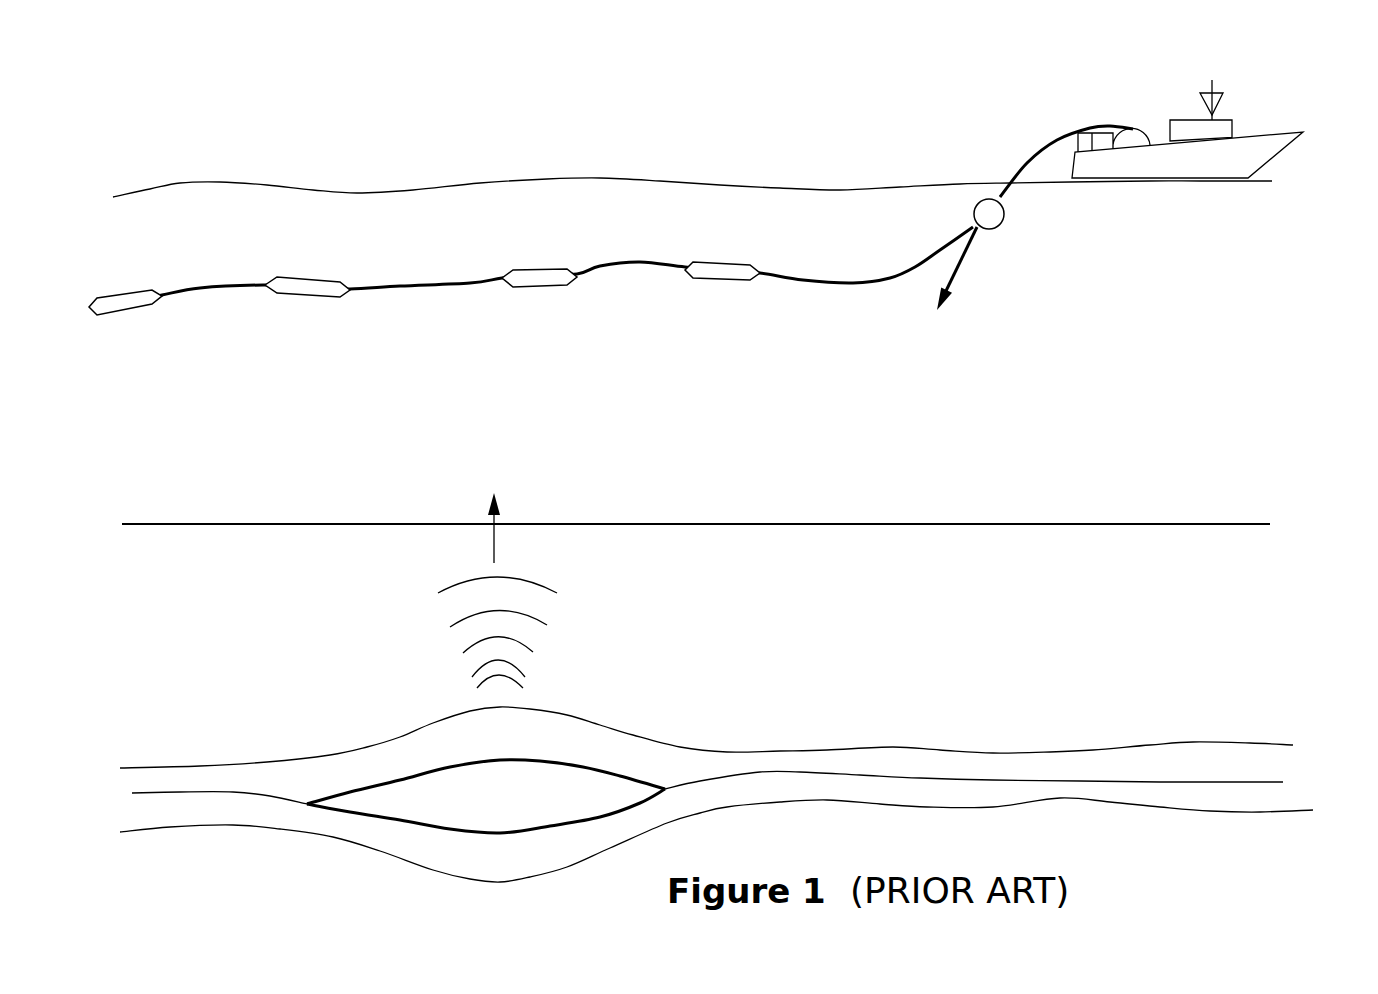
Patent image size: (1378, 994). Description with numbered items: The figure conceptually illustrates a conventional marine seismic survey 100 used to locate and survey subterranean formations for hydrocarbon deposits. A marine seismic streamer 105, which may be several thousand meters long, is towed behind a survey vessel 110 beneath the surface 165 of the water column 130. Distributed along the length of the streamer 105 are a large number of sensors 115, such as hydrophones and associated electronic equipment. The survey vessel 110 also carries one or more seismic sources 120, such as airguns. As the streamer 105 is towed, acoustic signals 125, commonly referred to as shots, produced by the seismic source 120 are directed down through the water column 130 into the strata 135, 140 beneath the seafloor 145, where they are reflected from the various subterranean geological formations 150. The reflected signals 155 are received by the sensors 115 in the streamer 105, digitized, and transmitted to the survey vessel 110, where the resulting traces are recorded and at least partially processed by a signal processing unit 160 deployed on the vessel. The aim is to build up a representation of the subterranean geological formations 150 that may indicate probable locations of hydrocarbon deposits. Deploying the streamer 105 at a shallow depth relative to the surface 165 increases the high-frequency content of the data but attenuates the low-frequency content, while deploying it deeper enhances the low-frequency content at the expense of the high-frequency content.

The marine seismic survey 100 is at (866, 73).
The marine seismic streamer 105 is at (1023, 165).
The survey vessel 110 is at (1273, 160).
The sensors 115 is at (122, 316).
The seismic source 120 is at (990, 199).
The acoustic signals 125 is at (962, 275).
The water column 130 is at (125, 386).
The strata 135 is at (500, 871).
The strata 140 is at (525, 750).
The seafloor 145 is at (225, 523).
The subterranean geological formations 150 is at (525, 805).
The reflected signals 155 is at (572, 657).
The signal processing unit 160 is at (1233, 131).
The surface 165 is at (565, 178).